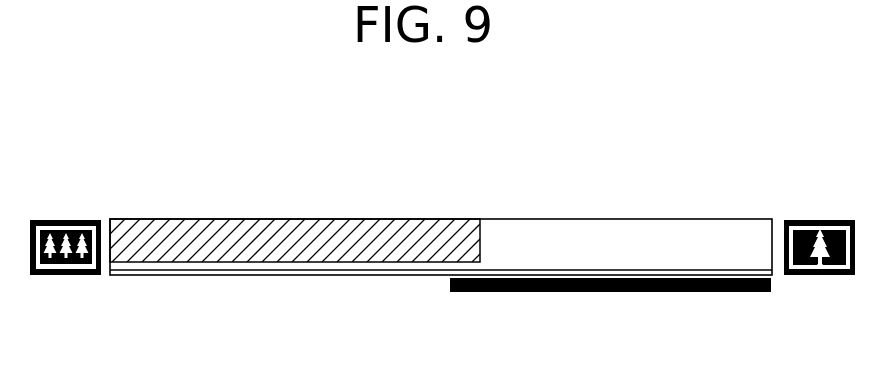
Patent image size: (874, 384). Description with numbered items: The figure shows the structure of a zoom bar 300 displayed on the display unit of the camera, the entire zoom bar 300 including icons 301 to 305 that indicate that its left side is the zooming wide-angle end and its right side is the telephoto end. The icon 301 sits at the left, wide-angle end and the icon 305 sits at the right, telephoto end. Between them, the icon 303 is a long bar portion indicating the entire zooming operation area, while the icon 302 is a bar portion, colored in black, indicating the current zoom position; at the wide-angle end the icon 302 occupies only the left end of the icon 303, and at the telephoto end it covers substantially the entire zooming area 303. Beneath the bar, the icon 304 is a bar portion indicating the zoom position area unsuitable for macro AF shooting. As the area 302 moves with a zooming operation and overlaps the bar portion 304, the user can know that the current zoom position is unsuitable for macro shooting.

The zoom bar 300 is at (70, 134).
The icon 301 is at (54, 219).
The icon 302 is at (285, 219).
The icon 303 is at (554, 219).
The icon 304 is at (587, 293).
The icon 305 is at (797, 219).